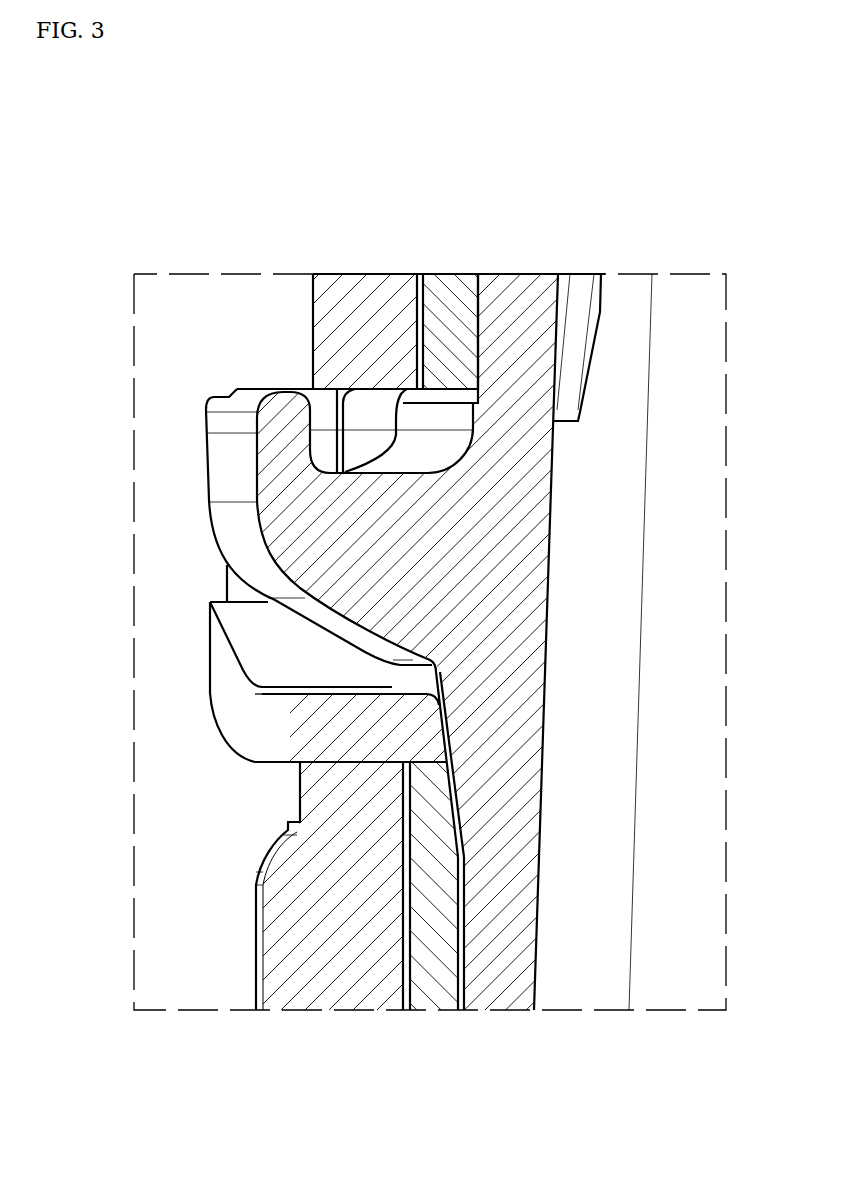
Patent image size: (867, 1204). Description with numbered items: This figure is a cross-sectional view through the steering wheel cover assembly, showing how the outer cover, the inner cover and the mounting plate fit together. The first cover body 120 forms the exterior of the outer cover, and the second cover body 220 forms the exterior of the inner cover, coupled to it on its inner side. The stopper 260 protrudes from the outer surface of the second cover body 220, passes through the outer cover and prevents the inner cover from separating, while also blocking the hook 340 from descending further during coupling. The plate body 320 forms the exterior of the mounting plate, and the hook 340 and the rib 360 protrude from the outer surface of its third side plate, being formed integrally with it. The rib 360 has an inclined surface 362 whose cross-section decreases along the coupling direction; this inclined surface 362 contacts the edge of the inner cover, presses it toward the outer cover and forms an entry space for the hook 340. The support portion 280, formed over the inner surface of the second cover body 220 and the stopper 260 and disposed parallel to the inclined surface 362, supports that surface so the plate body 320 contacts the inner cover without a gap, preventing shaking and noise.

The first cover body 120 is at (157, 769).
The second cover body 220 is at (453, 288).
The stopper 260 is at (238, 706).
The support portion 280 is at (447, 768).
The plate body 320 is at (527, 288).
The hook 340 is at (228, 468).
The rib 360 is at (449, 725).
The inclined surface 362 is at (446, 758).